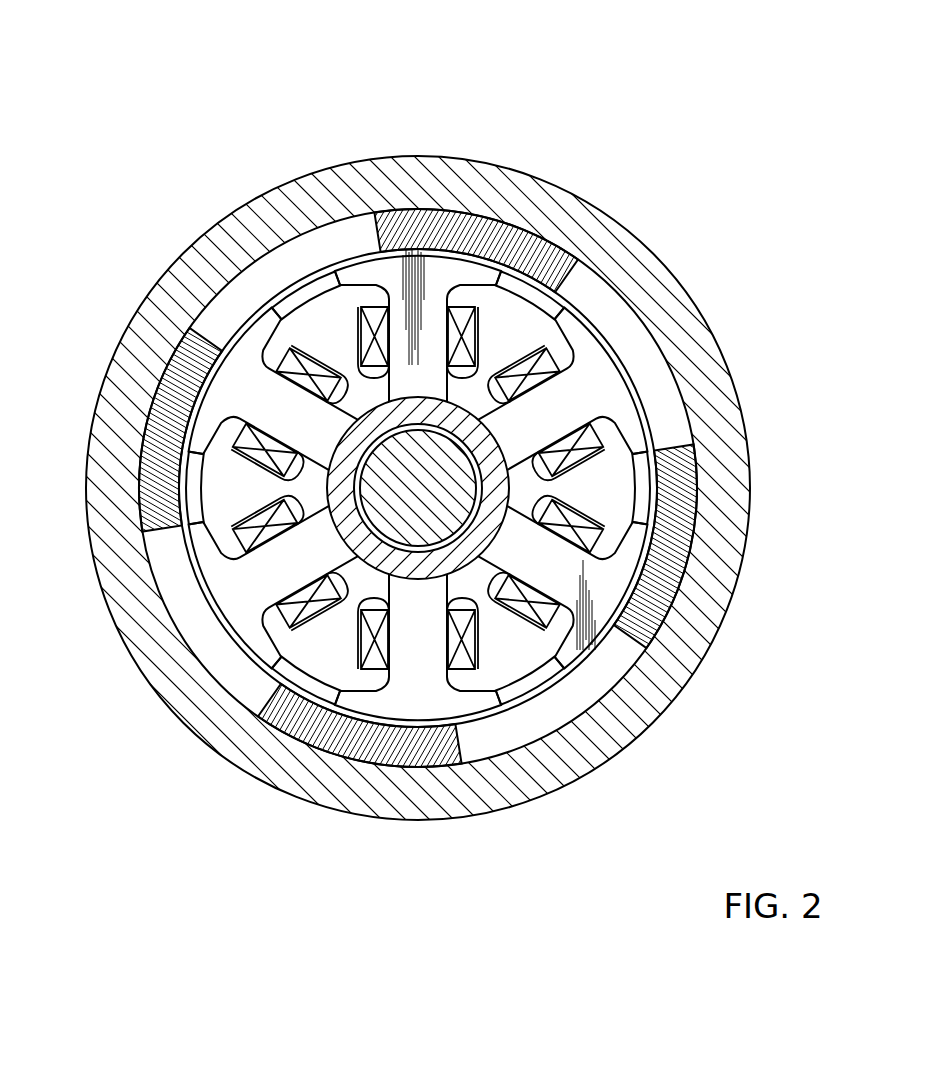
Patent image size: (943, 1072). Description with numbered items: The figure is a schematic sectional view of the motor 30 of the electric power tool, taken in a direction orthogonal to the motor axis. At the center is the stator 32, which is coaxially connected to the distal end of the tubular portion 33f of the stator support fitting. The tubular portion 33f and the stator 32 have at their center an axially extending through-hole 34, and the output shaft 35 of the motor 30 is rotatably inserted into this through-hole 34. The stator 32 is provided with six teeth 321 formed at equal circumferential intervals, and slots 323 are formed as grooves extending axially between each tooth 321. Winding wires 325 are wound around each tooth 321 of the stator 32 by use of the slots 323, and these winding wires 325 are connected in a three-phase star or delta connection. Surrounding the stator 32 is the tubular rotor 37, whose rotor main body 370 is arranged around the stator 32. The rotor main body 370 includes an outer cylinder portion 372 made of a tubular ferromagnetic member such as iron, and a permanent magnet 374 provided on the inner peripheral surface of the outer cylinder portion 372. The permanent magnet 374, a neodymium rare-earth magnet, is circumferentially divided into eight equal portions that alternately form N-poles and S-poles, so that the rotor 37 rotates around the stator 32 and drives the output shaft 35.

The motor 30 is at (370, 127).
The stator 32 is at (354, 372).
The teeth 321 is at (245, 390).
The slots 323 is at (347, 375).
The winding wires 325 is at (290, 270).
The tubular portion 33f is at (453, 417).
The through-hole 34 is at (455, 472).
The output shaft 35 is at (437, 476).
The rotor 37 is at (418, 152).
The rotor main body 370 is at (418, 404).
The outer cylinder portion 372 is at (455, 195).
The permanent magnet 374 is at (522, 252).